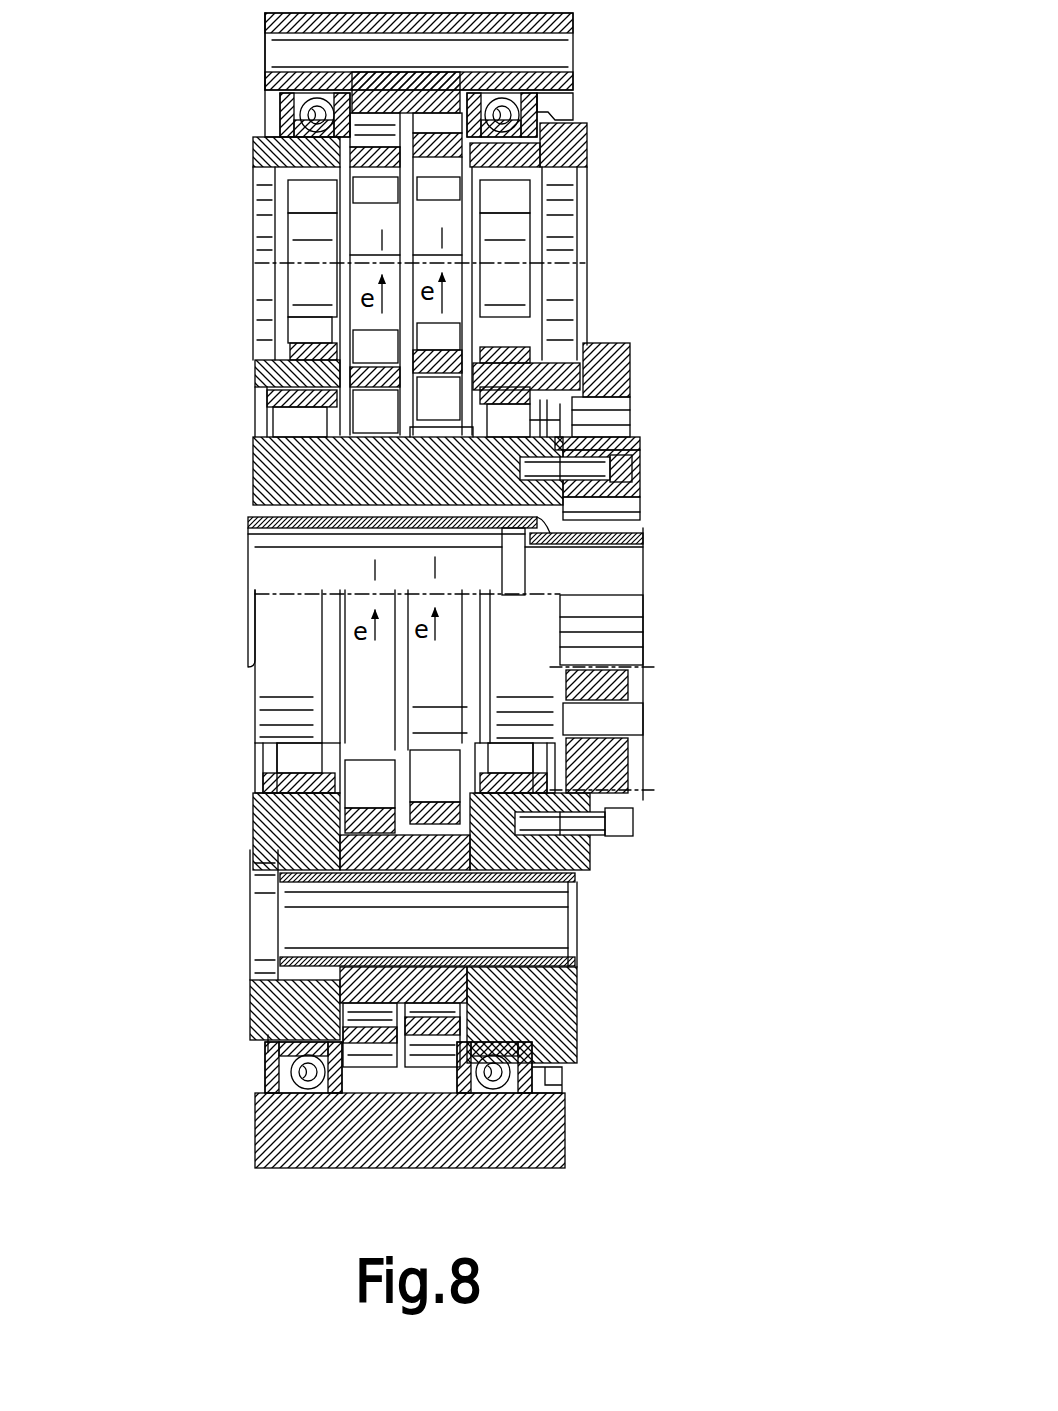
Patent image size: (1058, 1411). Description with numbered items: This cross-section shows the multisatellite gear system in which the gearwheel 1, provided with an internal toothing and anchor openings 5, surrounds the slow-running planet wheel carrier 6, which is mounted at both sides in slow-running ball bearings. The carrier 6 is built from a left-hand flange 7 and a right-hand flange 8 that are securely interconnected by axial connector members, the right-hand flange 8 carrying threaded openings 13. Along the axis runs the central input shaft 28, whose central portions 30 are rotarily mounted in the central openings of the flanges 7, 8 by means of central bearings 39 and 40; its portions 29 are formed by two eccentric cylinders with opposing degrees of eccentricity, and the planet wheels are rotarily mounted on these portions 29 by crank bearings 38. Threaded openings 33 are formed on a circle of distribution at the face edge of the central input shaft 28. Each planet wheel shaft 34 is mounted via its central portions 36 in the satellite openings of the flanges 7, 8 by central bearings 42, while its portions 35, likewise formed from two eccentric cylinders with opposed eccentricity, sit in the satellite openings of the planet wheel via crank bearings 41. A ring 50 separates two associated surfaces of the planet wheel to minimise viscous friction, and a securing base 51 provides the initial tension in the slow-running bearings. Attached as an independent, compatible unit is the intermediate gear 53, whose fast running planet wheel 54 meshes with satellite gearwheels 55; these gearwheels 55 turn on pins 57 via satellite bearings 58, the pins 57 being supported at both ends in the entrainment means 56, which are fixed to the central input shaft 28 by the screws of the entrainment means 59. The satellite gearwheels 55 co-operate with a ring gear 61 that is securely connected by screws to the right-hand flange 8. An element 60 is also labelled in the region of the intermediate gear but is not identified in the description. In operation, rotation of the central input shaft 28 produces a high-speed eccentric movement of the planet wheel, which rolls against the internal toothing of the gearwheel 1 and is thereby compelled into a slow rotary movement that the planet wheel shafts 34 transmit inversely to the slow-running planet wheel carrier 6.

The gearwheel 1 is at (262, 16).
The anchor openings 5 is at (568, 50).
The slow-running planet wheel carrier 6 is at (262, 826).
The left-hand flange 7 is at (262, 1020).
The right-hand flange 8 is at (588, 1006).
The threaded openings 13 is at (495, 845).
The central input shaft 28 is at (262, 490).
The portions of the central input shaft 29 is at (352, 665).
The central portions 30 is at (298, 598).
The threaded openings 33 is at (600, 500).
The planet wheel shaft 34 is at (268, 232).
The portions of the planet wheel shaft 35 is at (358, 252).
The central portions 36 is at (330, 300).
The crank bearings 38 is at (380, 778).
The central bearing 39 is at (305, 425).
The central bearing 40 is at (558, 420).
The crank bearings 41 is at (345, 318).
The central bearings 42 is at (292, 200).
The ring 50 is at (372, 1046).
The securing base 51 is at (268, 1045).
The intermediate gear 53 is at (605, 345).
The fast running planet wheel 54 is at (250, 545).
The satellite gearwheels 55 is at (620, 770).
The entrainment means 56 is at (590, 465).
The pins 57 is at (612, 718).
The satellite bearings 58 is at (600, 680).
The screws of the entrainment means 59 is at (628, 470).
The flange 60 is at (633, 372).
The ring gear 61 is at (612, 800).